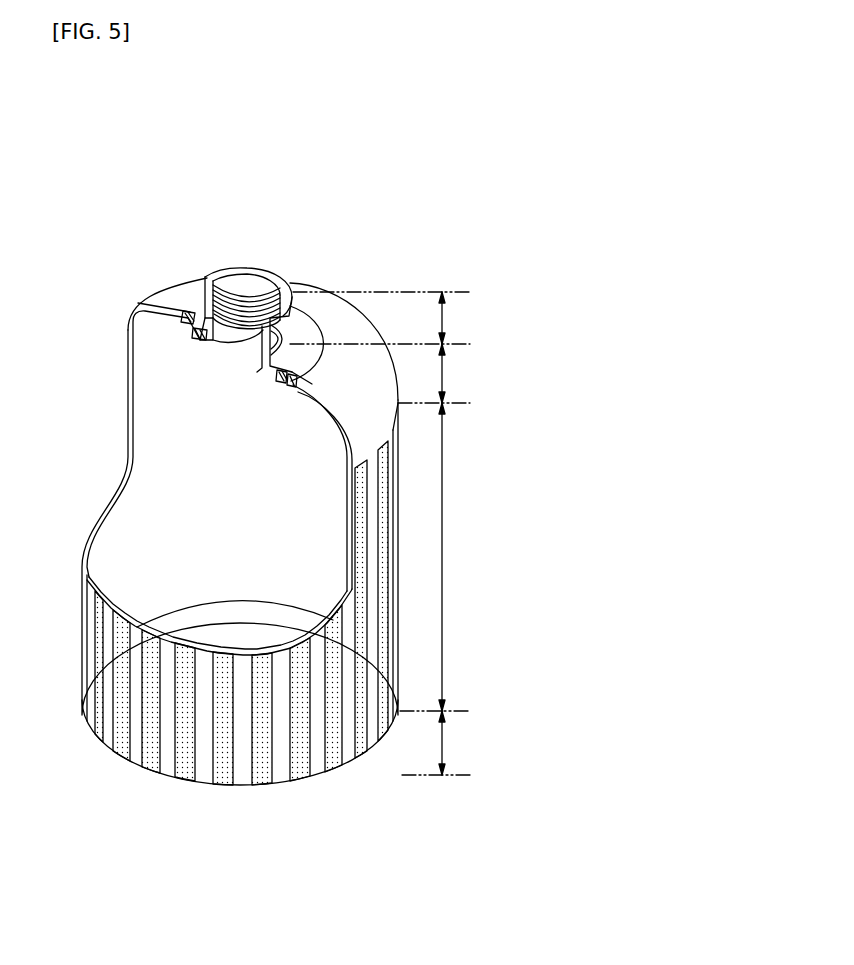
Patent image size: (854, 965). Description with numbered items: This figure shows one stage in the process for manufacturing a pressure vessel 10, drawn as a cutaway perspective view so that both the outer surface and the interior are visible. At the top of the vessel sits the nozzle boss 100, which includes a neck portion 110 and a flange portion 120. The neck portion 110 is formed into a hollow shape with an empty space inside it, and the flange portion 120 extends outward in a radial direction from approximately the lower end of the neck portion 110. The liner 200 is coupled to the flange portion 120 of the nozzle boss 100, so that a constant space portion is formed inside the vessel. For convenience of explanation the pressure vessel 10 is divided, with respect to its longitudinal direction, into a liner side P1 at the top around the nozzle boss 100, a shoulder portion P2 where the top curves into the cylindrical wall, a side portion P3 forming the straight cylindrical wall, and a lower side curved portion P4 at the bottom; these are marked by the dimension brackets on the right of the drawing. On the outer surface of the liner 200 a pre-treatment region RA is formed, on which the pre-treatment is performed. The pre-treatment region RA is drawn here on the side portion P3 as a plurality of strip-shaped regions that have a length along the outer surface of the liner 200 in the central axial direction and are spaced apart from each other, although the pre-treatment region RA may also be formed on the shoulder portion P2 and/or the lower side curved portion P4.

The pressure vessel 10 is at (417, 205).
The nozzle boss 100 is at (177, 182).
The neck portion 110 is at (207, 275).
The flange portion 120 is at (192, 313).
The liner 200 is at (305, 388).
The pre-treatment region RA is at (182, 737).
The liner side P1 is at (461, 318).
The shoulder portion P2 is at (461, 373).
The side portion P3 is at (462, 557).
The lower side curved portion P4 is at (461, 743).